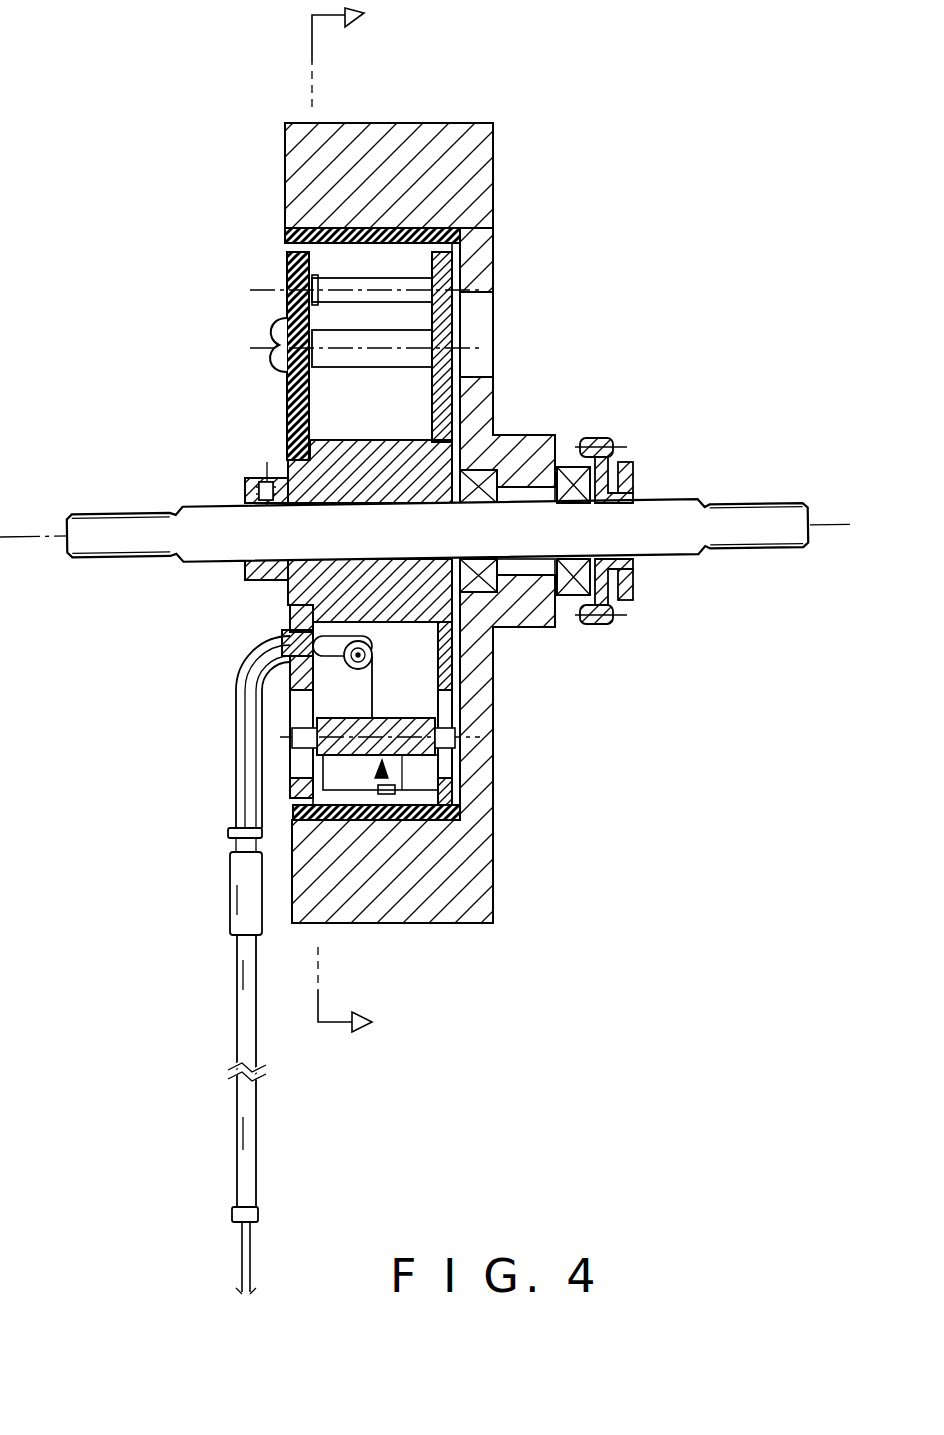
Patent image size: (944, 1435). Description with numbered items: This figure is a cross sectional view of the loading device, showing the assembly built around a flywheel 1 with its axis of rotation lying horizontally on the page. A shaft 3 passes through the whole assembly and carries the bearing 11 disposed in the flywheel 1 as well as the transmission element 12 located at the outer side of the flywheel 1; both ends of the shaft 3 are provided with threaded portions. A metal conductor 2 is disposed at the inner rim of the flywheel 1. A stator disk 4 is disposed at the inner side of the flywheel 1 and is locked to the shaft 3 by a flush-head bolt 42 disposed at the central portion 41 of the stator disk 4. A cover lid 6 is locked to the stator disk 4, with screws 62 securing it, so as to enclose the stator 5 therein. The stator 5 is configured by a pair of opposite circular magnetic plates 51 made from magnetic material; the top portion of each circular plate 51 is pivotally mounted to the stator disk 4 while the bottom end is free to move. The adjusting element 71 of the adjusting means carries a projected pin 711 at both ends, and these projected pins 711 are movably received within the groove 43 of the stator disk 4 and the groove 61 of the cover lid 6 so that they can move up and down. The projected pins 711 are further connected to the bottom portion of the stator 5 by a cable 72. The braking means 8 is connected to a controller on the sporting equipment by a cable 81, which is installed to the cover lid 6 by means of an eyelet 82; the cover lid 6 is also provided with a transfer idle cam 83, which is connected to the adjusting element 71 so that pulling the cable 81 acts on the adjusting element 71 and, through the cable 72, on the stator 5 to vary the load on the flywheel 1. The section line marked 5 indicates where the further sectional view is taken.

The flywheel 1 is at (366, 152).
The metal conductor 2 is at (400, 236).
The shaft 3 is at (526, 540).
The stator disk 4 is at (440, 406).
The stator 5 is at (360, 524).
The cover lid 6 is at (290, 396).
The braking means 8 is at (208, 994).
The bearing 11 is at (573, 486).
The transmission element 12 is at (634, 486).
The central portion 41 is at (268, 471).
The flush-head bolt 42 is at (256, 478).
The groove 43 is at (450, 707).
The circular magnetic plate 51 is at (290, 296).
The groove 61 is at (300, 711).
The screw 62 is at (281, 331).
The adjusting element 71 is at (435, 830).
The cable 72 is at (383, 790).
The cable 81 is at (265, 666).
The eyelet 82 is at (290, 631).
The transfer idle cam 83 is at (374, 661).
The projected pin 711 is at (300, 761).